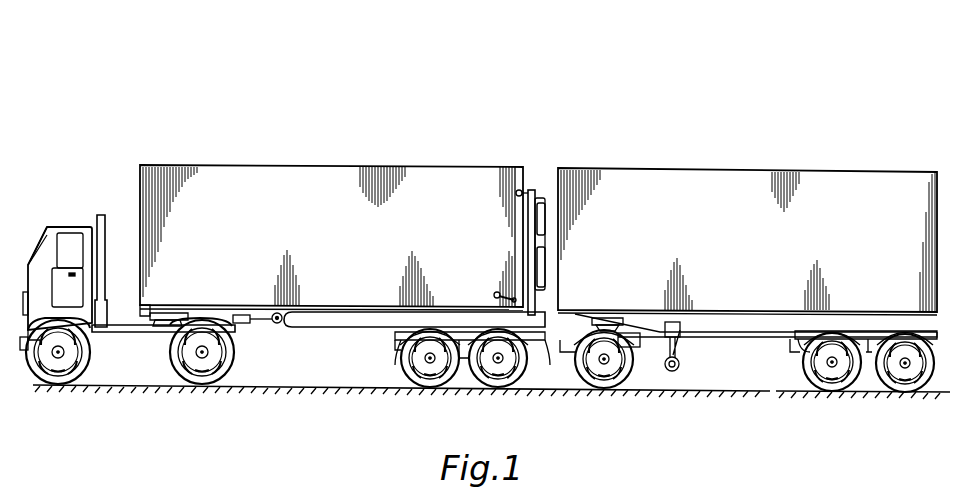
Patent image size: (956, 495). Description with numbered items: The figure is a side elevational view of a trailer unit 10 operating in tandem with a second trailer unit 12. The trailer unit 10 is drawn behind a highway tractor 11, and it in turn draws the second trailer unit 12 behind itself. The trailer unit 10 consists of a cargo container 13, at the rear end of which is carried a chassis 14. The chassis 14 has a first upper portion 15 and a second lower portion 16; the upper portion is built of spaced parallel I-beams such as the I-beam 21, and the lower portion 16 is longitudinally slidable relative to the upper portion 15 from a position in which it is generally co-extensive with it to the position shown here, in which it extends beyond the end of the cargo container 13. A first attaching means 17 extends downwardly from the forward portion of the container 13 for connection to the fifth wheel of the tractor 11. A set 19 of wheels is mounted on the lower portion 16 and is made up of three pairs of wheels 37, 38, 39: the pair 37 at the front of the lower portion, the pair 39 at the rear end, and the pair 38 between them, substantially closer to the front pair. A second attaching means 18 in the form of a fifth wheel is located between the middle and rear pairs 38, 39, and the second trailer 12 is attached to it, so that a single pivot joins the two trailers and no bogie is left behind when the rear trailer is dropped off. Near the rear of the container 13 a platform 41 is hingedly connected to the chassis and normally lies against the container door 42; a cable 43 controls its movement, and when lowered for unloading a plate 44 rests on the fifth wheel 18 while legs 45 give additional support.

The trailer unit 10 is at (250, 160).
The highway tractor 11 is at (68, 227).
The second trailer unit 12 is at (770, 180).
The cargo container 13 is at (446, 182).
The chassis 14 is at (393, 342).
The first upper portion 15 is at (305, 312).
The second lower portion 16 is at (462, 380).
The first attaching means 17 is at (170, 325).
The second attaching means 18 is at (612, 318).
The set of wheels 19 is at (603, 390).
The I-beam 21 is at (340, 320).
The front pair of wheels 37 is at (440, 386).
The middle pair of wheels 38 is at (515, 386).
The rear pair of wheels 39 is at (620, 383).
The platform 41 is at (538, 190).
The container door 42 is at (526, 190).
The cable 43 is at (512, 256).
The plate 44 is at (548, 265).
The legs 45 is at (548, 212).